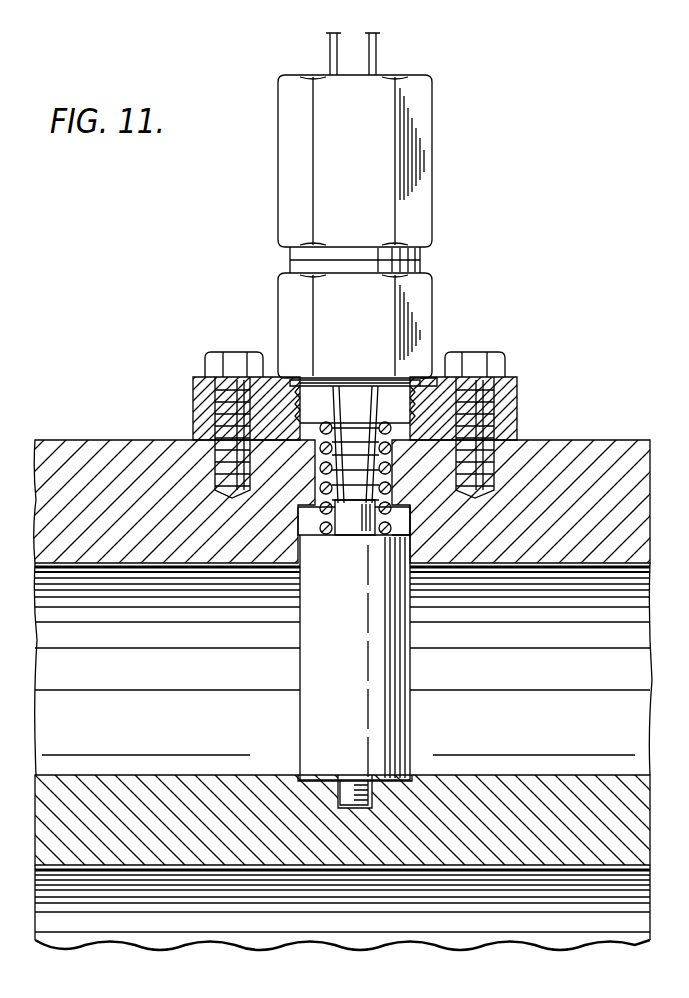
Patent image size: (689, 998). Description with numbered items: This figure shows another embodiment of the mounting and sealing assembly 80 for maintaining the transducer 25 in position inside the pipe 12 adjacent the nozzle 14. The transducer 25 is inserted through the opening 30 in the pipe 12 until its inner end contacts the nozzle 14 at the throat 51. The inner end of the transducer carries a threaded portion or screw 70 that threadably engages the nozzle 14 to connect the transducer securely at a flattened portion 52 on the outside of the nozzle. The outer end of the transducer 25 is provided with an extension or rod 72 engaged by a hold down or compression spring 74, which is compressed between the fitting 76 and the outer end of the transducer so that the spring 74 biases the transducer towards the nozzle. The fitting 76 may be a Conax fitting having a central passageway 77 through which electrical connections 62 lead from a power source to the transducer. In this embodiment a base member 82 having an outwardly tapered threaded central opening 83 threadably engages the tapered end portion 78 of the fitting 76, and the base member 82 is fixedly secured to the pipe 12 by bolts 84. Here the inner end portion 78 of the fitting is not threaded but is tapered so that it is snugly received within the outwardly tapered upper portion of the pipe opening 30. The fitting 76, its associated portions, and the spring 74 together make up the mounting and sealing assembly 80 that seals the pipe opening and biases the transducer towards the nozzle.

The electrical connections 62 is at (372, 45).
The fitting 76 is at (432, 200).
The mounting and sealing assembly 80 is at (445, 262).
The inner end portion 78 is at (388, 380).
The threaded central opening 83 is at (437, 377).
The base member 82 is at (517, 398).
The central passageway 77 is at (273, 378).
The bolts 84 is at (495, 356).
The pipe 12 is at (582, 440).
The compression spring 74 is at (320, 512).
The rod 72 is at (350, 535).
The pipe opening 30 is at (413, 512).
The transducer 25 is at (410, 676).
The screw 70 is at (338, 798).
The flattened portion 52 is at (412, 775).
The nozzle 14 is at (533, 775).
The throat 51 is at (350, 870).